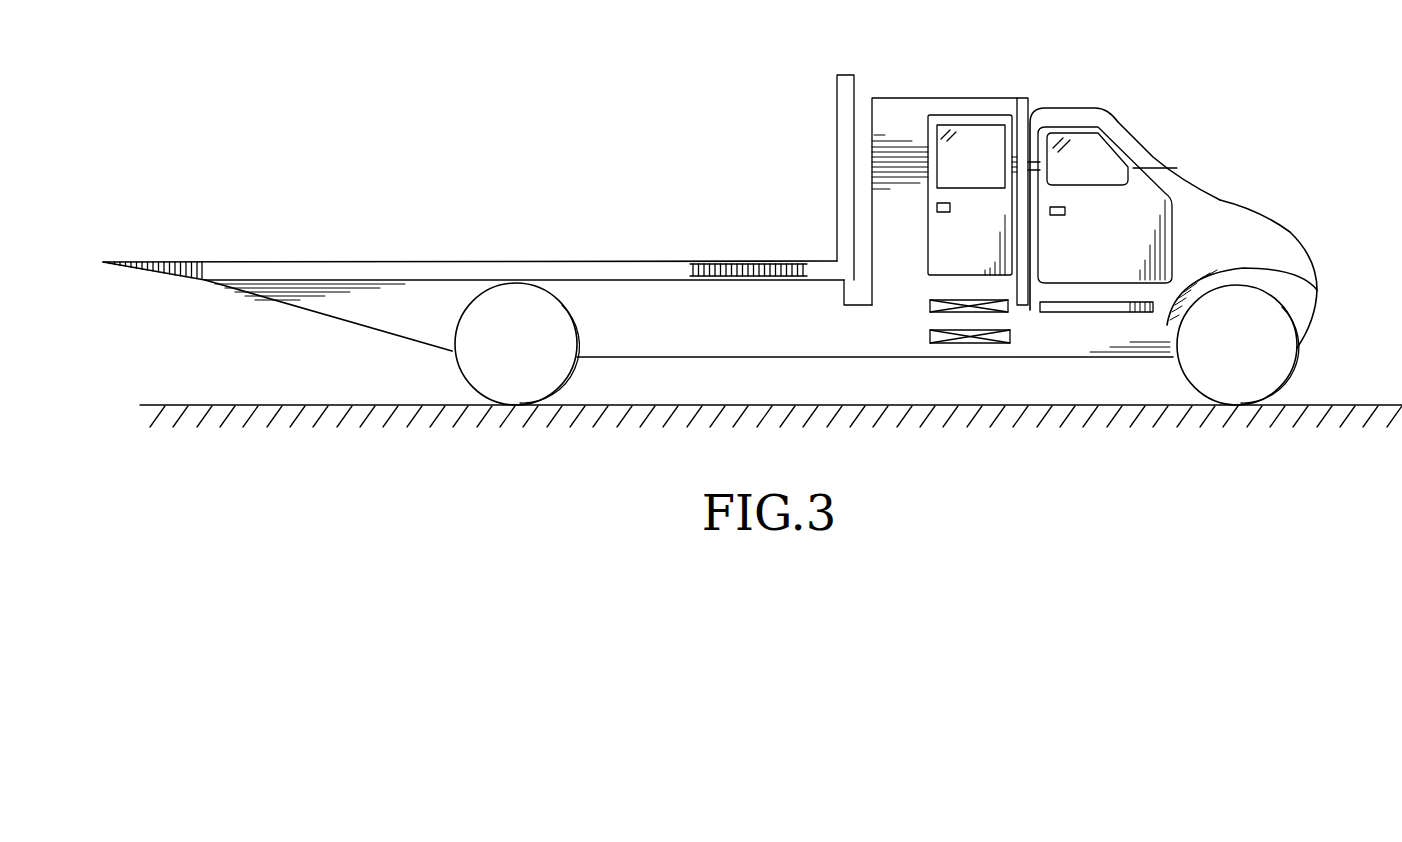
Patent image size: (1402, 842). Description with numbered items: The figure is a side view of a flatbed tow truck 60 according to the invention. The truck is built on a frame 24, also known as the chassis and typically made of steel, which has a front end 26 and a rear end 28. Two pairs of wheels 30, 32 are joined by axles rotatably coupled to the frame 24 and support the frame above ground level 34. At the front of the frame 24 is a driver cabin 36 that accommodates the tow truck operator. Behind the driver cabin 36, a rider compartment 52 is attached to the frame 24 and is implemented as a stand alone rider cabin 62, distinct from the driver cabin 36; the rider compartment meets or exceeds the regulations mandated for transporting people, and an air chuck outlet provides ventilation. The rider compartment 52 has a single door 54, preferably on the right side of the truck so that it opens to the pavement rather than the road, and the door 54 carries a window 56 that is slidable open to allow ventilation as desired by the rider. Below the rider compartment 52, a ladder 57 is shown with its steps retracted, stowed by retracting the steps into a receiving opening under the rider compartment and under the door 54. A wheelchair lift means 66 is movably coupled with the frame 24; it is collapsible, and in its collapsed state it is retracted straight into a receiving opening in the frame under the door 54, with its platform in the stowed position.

The frame 24 is at (779, 332).
The front end 26 is at (1325, 317).
The rear end 28 is at (205, 299).
The wheels 30 is at (478, 370).
The wheels 32 is at (1203, 377).
The ground level 34 is at (678, 400).
The driver cabin 36 is at (1138, 147).
The rider compartment 52 is at (1003, 95).
The door 54 is at (946, 195).
The window 56 is at (967, 172).
The ladder 57 is at (1022, 335).
The tow truck 60 is at (538, 70).
The stand alone rider cabin 62 is at (901, 110).
The wheelchair lift means 66 is at (922, 307).